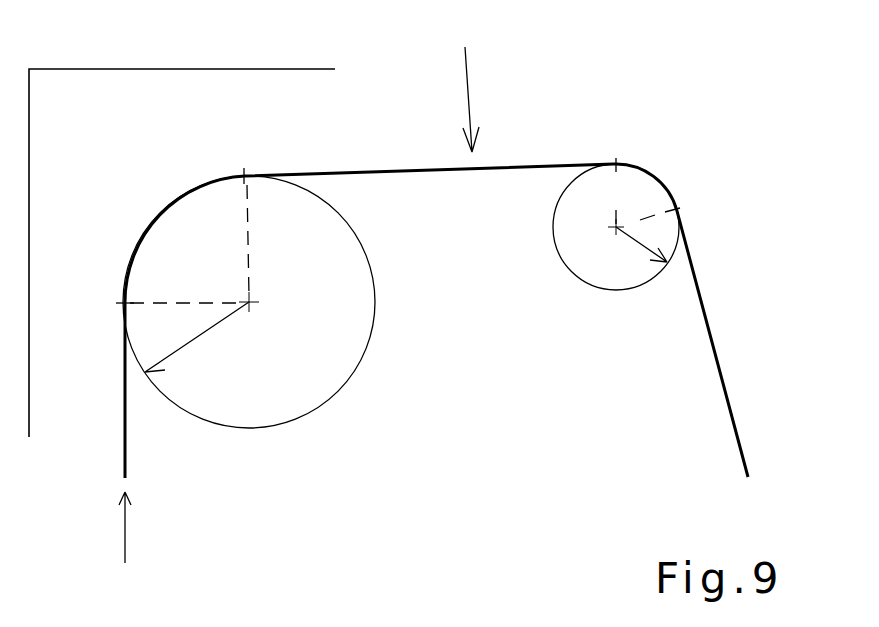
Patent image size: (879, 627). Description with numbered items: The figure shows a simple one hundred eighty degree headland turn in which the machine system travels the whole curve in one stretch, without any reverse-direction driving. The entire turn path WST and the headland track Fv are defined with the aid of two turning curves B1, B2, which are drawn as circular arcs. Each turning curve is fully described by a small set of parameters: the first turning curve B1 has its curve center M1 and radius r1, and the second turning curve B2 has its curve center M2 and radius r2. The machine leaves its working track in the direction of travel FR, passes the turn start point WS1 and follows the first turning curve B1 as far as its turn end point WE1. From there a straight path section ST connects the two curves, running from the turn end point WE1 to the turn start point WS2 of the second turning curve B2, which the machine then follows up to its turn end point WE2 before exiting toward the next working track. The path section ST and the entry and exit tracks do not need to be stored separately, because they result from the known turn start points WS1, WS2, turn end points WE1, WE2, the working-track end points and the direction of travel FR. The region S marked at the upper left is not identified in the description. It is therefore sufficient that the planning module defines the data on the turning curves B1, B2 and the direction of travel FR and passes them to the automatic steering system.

The saw / sawing device frame S is at (105, 131).
The path section ST is at (400, 170).
The first turning curve B1 is at (149, 224).
The second turning curve B2 is at (662, 180).
The turn end point of first turning curve WE1 is at (244, 188).
The turn start point of first turning curve WS1 is at (125, 303).
The turn path WST is at (527, 165).
The turn start point of second turning curve WS2 is at (613, 180).
The turn end point of second turning curve WE2 is at (677, 211).
The curve center of first turning curve M1 is at (249, 302).
The radius of first turning curve r1 is at (200, 340).
The curve center of second turning curve M2 is at (616, 227).
The radius of second turning curve r2 is at (634, 240).
The headland track Fv is at (470, 84).
The direction of travel FR is at (125, 527).